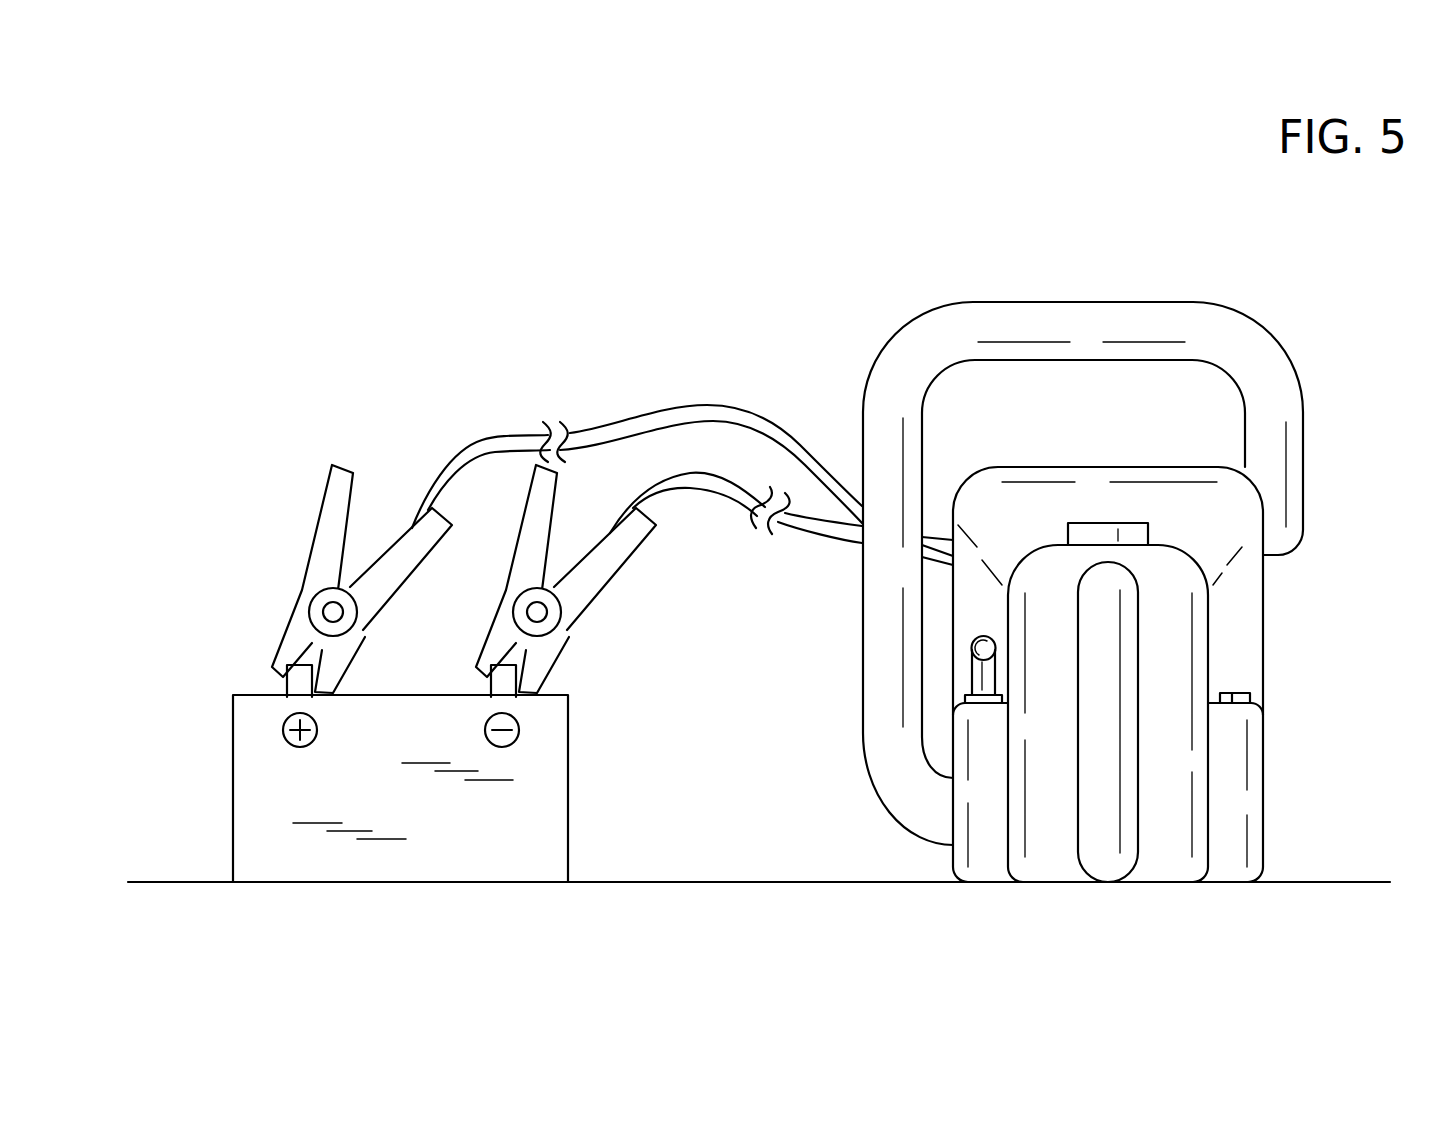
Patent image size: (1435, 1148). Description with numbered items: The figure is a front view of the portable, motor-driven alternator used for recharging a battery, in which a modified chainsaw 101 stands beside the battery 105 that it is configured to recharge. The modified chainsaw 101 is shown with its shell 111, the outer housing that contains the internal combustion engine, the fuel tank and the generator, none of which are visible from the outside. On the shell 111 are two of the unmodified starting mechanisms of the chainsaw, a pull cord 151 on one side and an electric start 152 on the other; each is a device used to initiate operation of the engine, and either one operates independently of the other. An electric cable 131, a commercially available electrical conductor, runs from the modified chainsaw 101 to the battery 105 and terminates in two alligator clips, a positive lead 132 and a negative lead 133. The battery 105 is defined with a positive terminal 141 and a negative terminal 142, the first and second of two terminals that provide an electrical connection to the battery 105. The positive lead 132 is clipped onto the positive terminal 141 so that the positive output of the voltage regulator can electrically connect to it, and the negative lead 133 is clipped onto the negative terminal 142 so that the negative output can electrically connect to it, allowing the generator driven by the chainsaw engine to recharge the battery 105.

The modified chainsaw 101 is at (1300, 380).
The battery 105 is at (552, 833).
The shell 111 is at (1263, 633).
The electric cable 131 is at (712, 483).
The positive lead 132 is at (768, 467).
The negative lead 133 is at (538, 503).
The positive terminal 141 is at (288, 741).
The negative terminal 142 is at (516, 740).
The pull cord 151 is at (975, 677).
The electric start 152 is at (1243, 693).